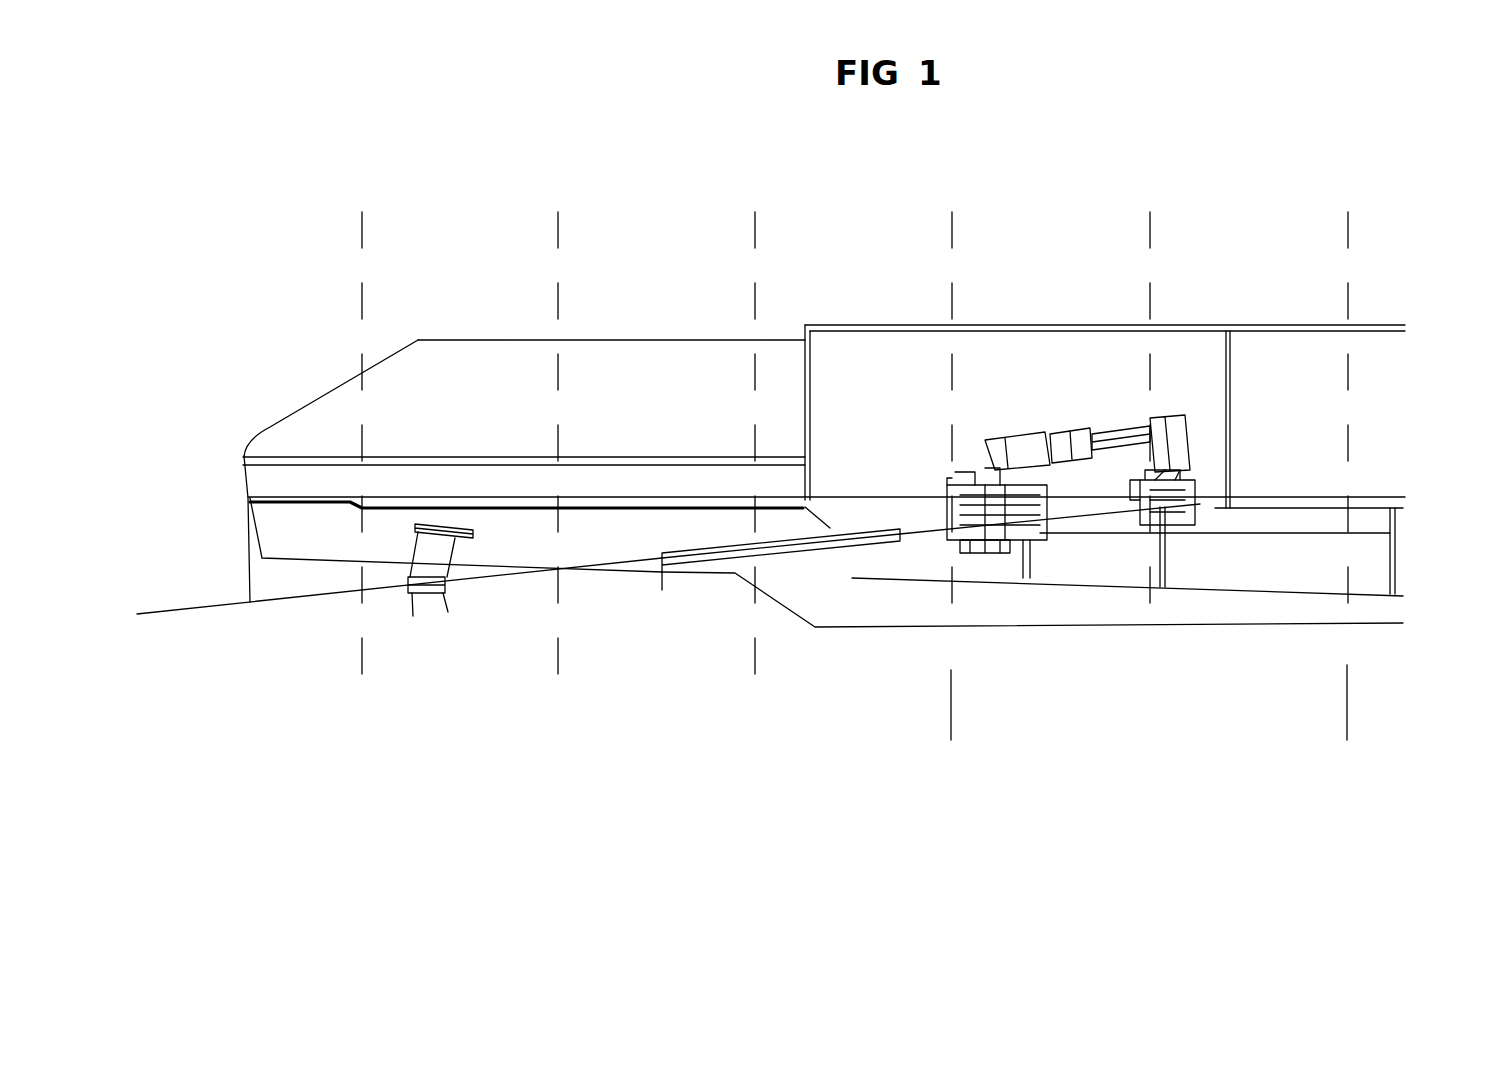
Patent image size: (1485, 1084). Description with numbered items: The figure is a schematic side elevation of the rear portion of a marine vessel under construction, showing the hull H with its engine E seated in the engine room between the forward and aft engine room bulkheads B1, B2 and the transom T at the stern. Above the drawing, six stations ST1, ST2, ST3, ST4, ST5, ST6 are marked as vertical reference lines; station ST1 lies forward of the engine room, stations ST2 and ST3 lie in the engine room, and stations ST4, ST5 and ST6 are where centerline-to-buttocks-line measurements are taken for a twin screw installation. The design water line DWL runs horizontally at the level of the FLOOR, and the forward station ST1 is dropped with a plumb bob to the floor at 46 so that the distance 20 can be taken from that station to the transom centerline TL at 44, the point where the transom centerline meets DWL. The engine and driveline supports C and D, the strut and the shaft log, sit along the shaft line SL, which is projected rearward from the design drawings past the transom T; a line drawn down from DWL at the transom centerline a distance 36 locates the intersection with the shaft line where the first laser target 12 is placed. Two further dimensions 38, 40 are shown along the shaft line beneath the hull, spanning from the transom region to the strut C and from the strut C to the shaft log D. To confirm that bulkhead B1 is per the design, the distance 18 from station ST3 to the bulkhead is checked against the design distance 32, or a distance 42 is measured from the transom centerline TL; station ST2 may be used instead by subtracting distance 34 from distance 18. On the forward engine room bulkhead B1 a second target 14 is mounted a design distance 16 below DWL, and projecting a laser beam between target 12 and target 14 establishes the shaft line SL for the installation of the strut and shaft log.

The first laser target 12 is at (247, 604).
The forward engine room bulkhead target 14 is at (1218, 512).
The design distance 16 is at (1202, 455).
The distance 18 is at (1226, 343).
The distance 20 is at (1347, 733).
The design distance 32 is at (1347, 718).
The distance 34 is at (1150, 463).
The distance 36 is at (218, 498).
The transom to trim tab dimension 38 is at (408, 614).
The trim tab to strake dimension 40 is at (660, 590).
The distance 42 is at (950, 685).
The transom centerline at DWL 44 is at (244, 494).
The floor location 46 is at (1350, 497).
The transom T is at (248, 498).
The engine and driveline support (strut) C is at (428, 594).
The engine and driveline support (shaft log) D is at (740, 561).
The engine E is at (1043, 436).
The hull H is at (1003, 632).
The forward engine room bulkhead B1 is at (1228, 400).
The aft engine room bulkhead B2 is at (808, 430).
The design water line DWL is at (1300, 498).
The floor FLOOR is at (593, 496).
The shaft line SL is at (173, 612).
The transom centerline TL is at (247, 707).
The station ST1 is at (1342, 462).
The station ST2 is at (1142, 408).
The station ST3 is at (945, 462).
The station ST4 is at (748, 442).
The station ST5 is at (550, 442).
The station ST6 is at (354, 442).